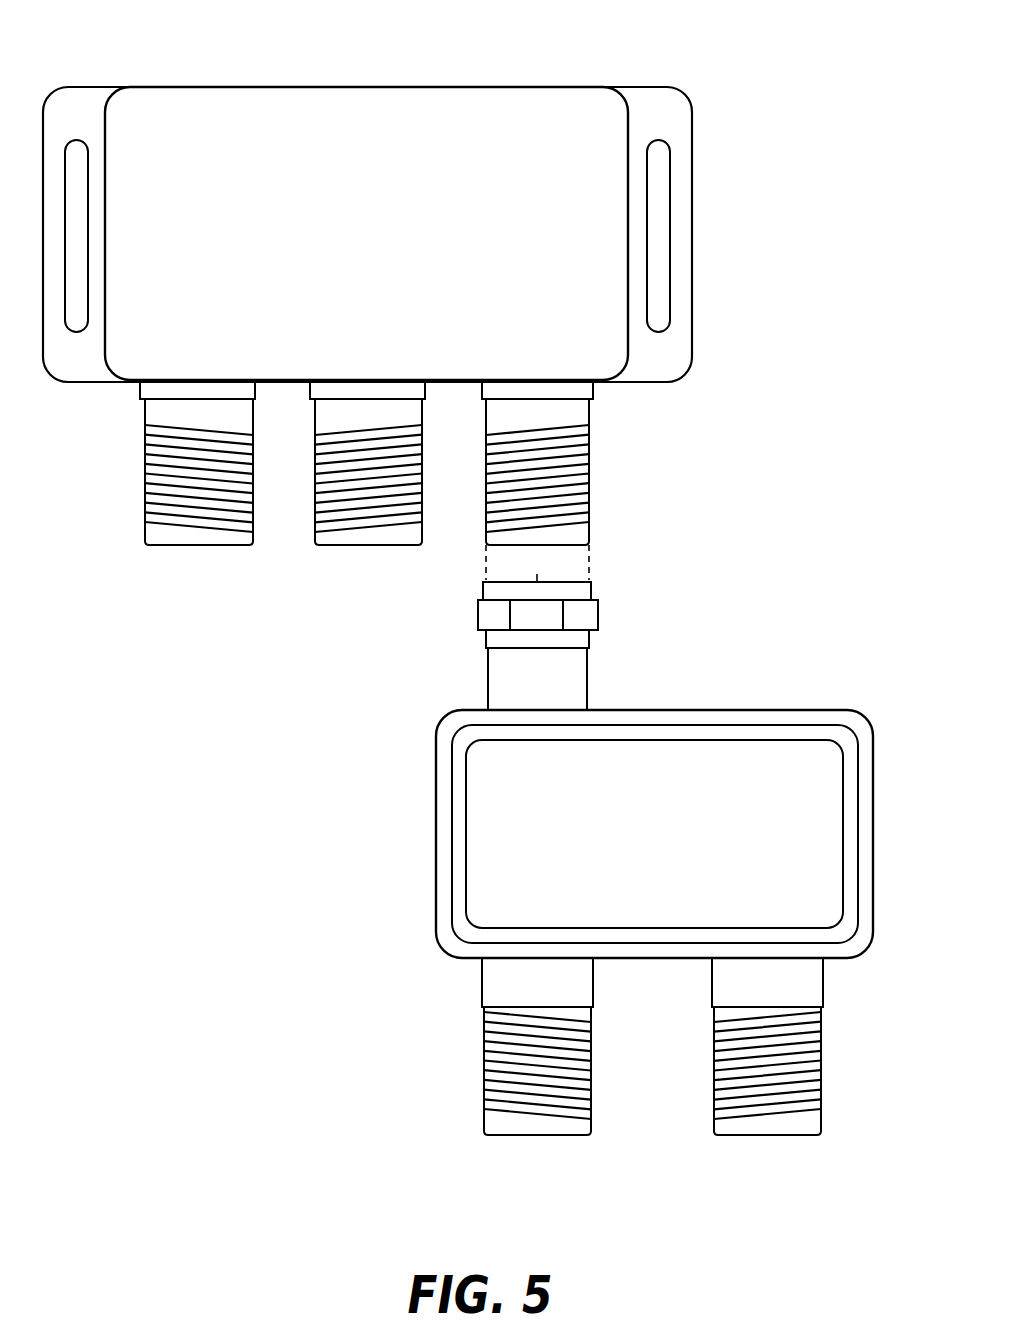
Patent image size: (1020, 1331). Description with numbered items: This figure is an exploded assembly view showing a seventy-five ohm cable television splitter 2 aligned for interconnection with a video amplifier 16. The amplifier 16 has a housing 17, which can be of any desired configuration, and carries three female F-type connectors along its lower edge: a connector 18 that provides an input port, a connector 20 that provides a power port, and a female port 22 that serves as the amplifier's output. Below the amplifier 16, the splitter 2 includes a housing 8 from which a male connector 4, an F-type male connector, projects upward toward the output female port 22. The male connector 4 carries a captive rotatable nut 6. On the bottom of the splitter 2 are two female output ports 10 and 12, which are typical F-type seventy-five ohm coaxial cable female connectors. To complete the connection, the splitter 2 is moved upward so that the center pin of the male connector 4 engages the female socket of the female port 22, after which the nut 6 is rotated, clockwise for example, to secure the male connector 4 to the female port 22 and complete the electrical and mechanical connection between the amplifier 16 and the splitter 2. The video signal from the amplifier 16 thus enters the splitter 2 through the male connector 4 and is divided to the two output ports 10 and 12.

The cable television splitter 2 is at (659, 872).
The male connector 4 is at (482, 592).
The captive rotatable nut 6 is at (488, 615).
The housing 8 is at (710, 708).
The female output port 10 is at (483, 1082).
The female output port 12 is at (822, 1058).
The amplifier 16 is at (470, 78).
The housing 17 is at (693, 168).
The connector 18 is at (152, 410).
The connector 20 is at (420, 413).
The female port 22 is at (583, 413).